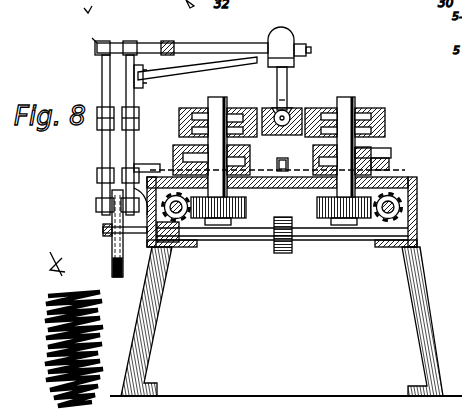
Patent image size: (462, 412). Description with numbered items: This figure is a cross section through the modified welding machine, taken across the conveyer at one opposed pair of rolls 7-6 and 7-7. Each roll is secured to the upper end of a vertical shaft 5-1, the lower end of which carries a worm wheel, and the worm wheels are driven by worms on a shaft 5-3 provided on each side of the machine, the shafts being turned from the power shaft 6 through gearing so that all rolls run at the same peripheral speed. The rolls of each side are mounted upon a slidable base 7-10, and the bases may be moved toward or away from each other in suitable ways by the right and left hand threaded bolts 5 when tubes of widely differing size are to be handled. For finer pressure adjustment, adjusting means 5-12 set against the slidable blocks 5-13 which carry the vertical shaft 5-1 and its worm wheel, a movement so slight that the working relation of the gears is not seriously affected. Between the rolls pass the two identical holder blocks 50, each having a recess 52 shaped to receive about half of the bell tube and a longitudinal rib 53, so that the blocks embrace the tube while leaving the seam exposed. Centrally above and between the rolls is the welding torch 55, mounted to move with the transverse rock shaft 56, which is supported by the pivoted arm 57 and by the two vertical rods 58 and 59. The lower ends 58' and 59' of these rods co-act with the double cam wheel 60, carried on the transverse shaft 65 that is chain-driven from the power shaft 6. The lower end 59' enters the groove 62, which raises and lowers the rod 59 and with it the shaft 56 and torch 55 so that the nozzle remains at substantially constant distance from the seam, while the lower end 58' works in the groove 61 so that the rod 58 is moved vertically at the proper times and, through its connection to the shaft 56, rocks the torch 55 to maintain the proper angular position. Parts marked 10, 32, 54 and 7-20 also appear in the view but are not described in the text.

The right and left hand threaded bolts 5 is at (405, 160).
The power shaft 6 is at (287, 110).
The table 10 is at (400, 178).
The block 32 is at (279, 157).
The block 50 is at (300, 112).
The vertical shaft 5-1 is at (220, 106).
The shaft 5-3 is at (265, 110).
The adjusting means 5-12 is at (398, 142).
The slidable block 5-13 is at (203, 107).
The recess 52 is at (232, 219).
The rib 53 is at (178, 222).
The shaft 54 is at (205, 226).
The welding torch 55 is at (295, 41).
The transverse rock shaft 56 is at (216, 44).
The arm 57 is at (168, 42).
The vertical rod 58 is at (159, 171).
The lower end of rod 58' is at (81, 214).
The vertical rod 59 is at (165, 122).
The lower end of rod 59' is at (118, 294).
The double cam wheel 60 is at (113, 247).
The cam groove 61 is at (103, 230).
The cam groove 62 is at (124, 172).
The transverse shaft 65 is at (287, 253).
The roll 7-6 is at (193, 107).
The roll 7-7 is at (373, 112).
The base 7-10 is at (252, 192).
The gear housing 7-20 is at (418, 187).